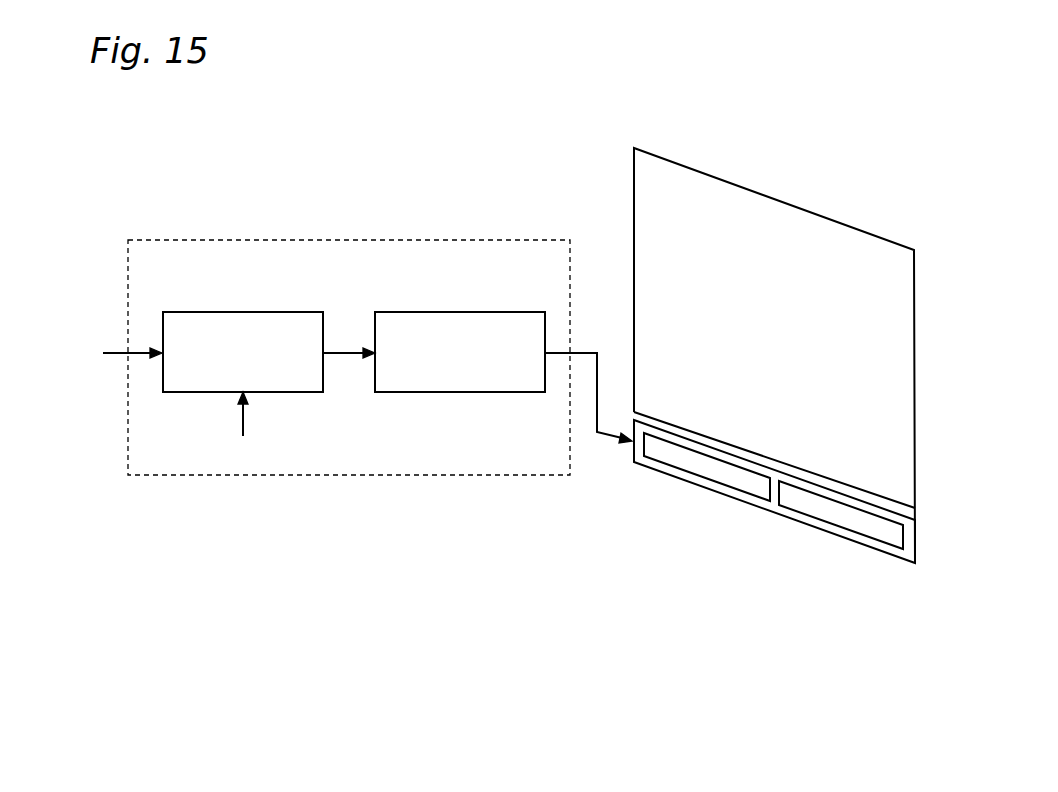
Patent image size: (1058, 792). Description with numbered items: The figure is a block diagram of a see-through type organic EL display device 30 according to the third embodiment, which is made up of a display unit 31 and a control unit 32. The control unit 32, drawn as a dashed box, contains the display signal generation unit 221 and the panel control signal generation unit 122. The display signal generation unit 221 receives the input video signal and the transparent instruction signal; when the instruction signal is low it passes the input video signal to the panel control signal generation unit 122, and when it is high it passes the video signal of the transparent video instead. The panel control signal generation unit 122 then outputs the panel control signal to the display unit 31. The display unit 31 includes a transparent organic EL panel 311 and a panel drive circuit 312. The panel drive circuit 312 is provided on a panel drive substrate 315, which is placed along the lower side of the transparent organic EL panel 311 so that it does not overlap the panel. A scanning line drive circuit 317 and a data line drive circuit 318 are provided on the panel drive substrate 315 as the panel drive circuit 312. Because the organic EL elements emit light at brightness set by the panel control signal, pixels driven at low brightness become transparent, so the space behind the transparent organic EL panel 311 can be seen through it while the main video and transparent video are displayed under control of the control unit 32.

The display device 30 is at (506, 153).
The display unit 31 is at (675, 565).
The control unit 32 is at (345, 240).
The panel control signal generation unit 122 is at (460, 312).
The display signal generation unit 221 is at (237, 312).
The transparent organic EL panel 311 is at (777, 200).
The panel drive circuit 312 is at (773, 516).
The panel drive substrate 315 is at (667, 475).
The scanning line drive circuit 317 is at (745, 490).
The data line drive circuit 318 is at (836, 524).